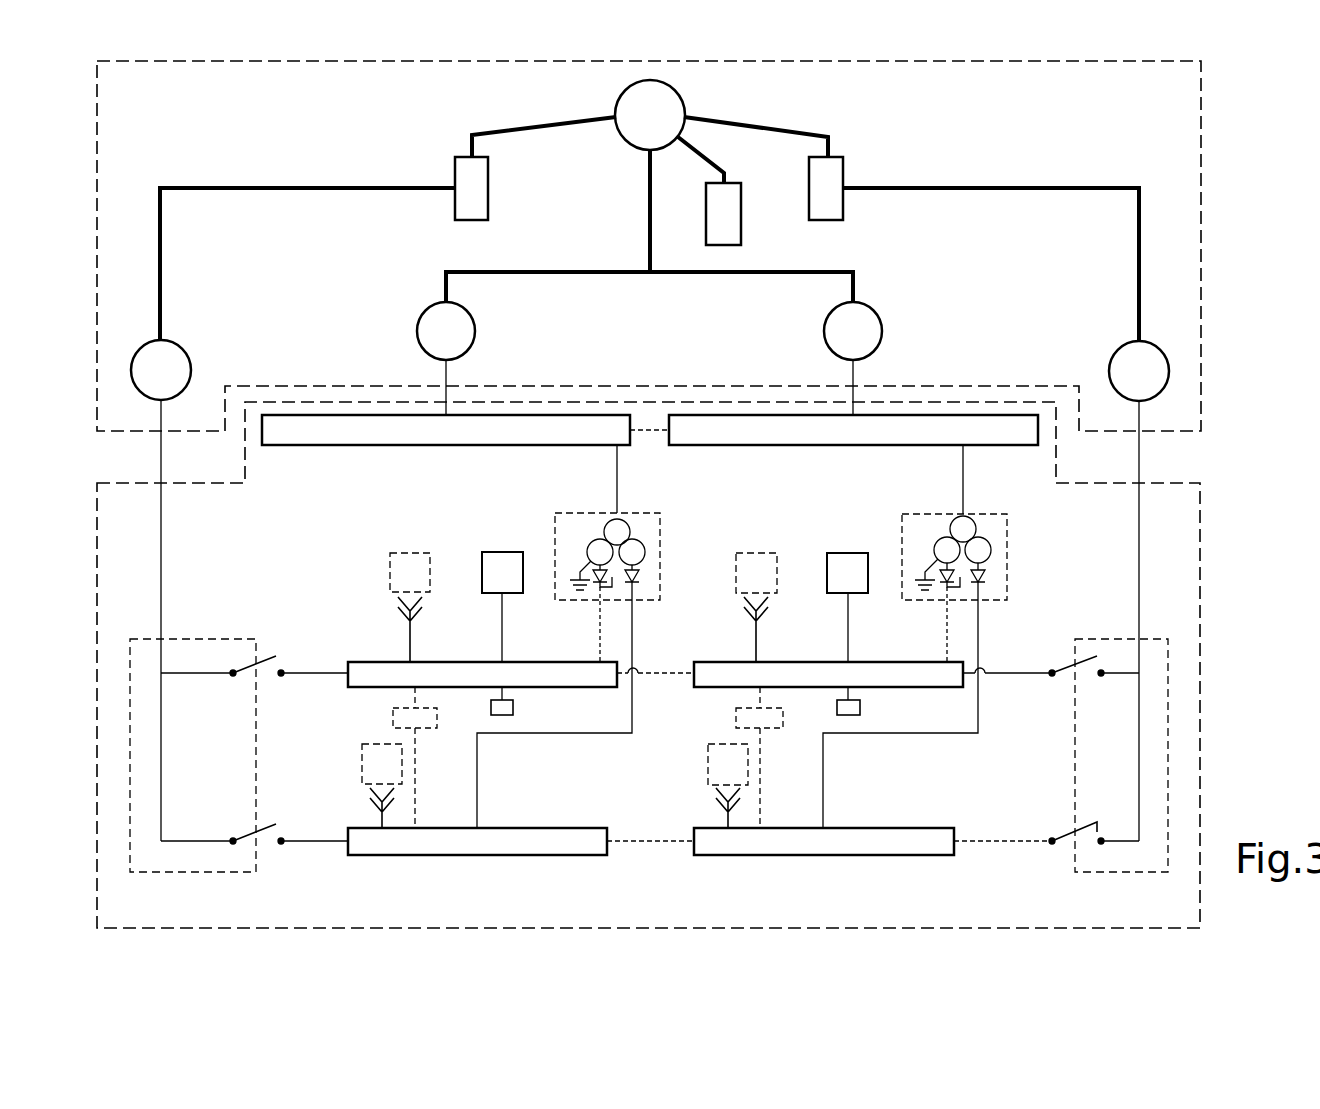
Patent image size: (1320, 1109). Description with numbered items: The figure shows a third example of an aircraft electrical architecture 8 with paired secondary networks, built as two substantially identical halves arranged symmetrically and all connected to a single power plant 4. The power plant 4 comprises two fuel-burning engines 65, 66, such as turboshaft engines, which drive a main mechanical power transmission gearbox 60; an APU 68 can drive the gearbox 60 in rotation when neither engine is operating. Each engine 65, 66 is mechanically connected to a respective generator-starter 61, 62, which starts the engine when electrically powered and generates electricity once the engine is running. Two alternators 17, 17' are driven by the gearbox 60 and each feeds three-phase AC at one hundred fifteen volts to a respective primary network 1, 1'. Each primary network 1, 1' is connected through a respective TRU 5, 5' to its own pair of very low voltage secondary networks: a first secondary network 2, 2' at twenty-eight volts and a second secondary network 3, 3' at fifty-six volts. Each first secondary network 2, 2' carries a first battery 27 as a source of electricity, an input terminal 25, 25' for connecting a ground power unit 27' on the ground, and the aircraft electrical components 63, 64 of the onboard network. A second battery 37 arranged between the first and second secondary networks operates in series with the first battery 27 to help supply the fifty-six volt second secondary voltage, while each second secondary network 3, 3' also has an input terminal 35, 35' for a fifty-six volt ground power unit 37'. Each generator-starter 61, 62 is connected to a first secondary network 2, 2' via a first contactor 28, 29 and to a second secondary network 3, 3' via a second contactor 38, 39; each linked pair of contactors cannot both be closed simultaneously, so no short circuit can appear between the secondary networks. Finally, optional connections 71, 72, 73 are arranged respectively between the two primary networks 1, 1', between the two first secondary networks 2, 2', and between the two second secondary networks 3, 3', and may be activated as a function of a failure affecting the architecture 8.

The power plant 4 is at (613, 61).
The electrical architecture 8 is at (97, 716).
The main mechanical power transmission gearbox 60 is at (633, 146).
The fuel-burning engine 65 is at (843, 166).
The fuel-burning engine 66 is at (455, 206).
The APU 68 is at (741, 205).
The generator-starter 62 is at (193, 352).
The generator-starter 61 is at (1116, 352).
The alternator 17 is at (892, 351).
The alternator 17' is at (406, 351).
The primary electrical network 1 is at (853, 466).
The primary electrical network 1' is at (446, 464).
The optional connection 71 is at (652, 430).
The first secondary network 2 is at (801, 654).
The first secondary network 2' is at (452, 654).
The optional connection 72 is at (655, 676).
The second secondary network 3 is at (824, 875).
The second secondary network 3' is at (477, 875).
The optional connection 73 is at (643, 855).
The TRU 5 is at (915, 650).
The TRU 5' is at (568, 652).
The first battery 27 is at (638, 584).
The ground power unit 27' is at (562, 594).
The input terminal 25 is at (726, 629).
The input terminal 25' is at (363, 622).
The electrical component 64 is at (513, 708).
The electrical component 63 is at (860, 708).
The second battery 37 is at (602, 757).
The ground power unit 37' is at (514, 765).
The input terminal 35 is at (655, 808).
The input terminal 35' is at (334, 801).
The first contactor 29 is at (262, 668).
The second contactor 39 is at (256, 836).
The first contactor 28 is at (1076, 668).
The second contactor 38 is at (1086, 836).